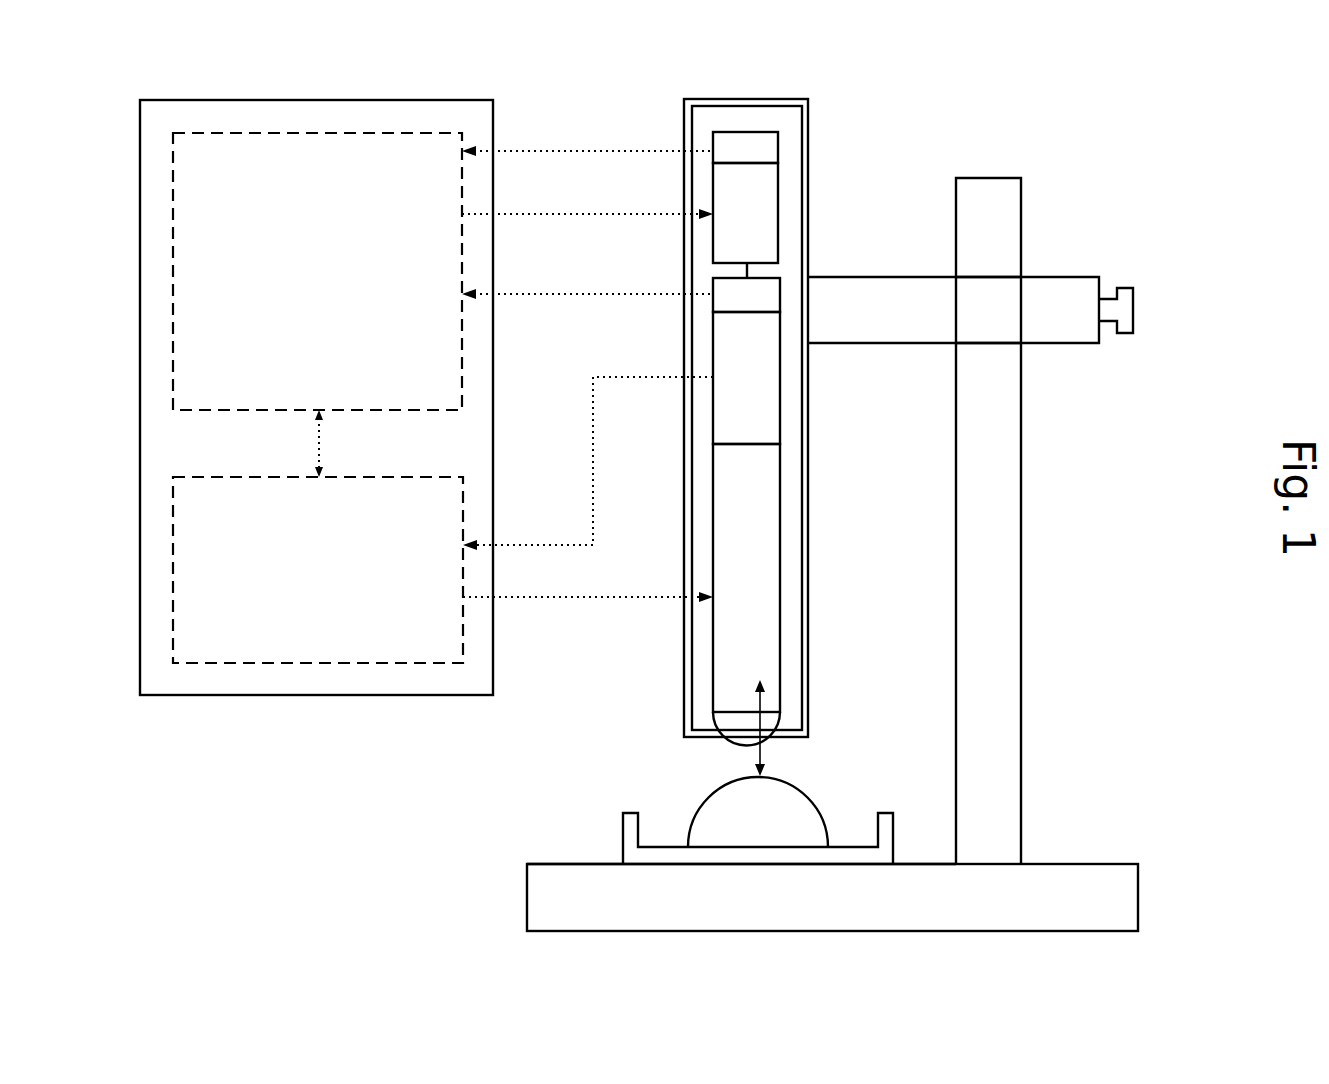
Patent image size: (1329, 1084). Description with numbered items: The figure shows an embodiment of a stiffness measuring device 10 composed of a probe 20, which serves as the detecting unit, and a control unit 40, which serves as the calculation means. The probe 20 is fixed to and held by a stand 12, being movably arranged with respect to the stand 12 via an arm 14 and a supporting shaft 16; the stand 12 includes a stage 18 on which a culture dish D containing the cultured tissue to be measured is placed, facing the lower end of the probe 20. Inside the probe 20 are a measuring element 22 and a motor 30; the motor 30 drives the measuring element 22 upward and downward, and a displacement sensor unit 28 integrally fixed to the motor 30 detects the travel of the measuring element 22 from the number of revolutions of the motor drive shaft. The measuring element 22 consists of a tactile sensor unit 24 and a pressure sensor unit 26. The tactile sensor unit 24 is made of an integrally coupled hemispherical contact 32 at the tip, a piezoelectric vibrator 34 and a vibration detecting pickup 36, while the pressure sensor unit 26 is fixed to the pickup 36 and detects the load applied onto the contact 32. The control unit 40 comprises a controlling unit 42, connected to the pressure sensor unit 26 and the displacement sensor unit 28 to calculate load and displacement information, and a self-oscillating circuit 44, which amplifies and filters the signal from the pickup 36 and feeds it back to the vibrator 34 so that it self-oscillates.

The stiffness measuring device 10 is at (1032, 178).
The stand 12 is at (527, 899).
The arm 14 is at (1062, 277).
The supporting shaft 16 is at (1021, 408).
The stage 18 is at (577, 863).
The probe 20 is at (684, 666).
The measuring element 22 is at (875, 182).
The tactile sensor unit 24 is at (875, 545).
The pressure sensor unit 26 is at (780, 296).
The displacement sensor unit 28 is at (778, 146).
The motor 30 is at (713, 197).
The contact 32 is at (762, 735).
The vibrator 34 is at (780, 462).
The pickup 36 is at (780, 408).
The control unit 40 is at (316, 437).
The controlling unit 42 is at (382, 410).
The self-oscillating circuit 44 is at (385, 477).
The culture dish D is at (893, 832).